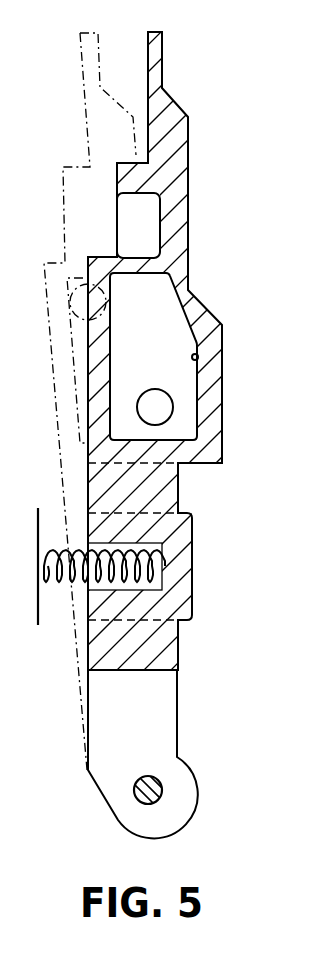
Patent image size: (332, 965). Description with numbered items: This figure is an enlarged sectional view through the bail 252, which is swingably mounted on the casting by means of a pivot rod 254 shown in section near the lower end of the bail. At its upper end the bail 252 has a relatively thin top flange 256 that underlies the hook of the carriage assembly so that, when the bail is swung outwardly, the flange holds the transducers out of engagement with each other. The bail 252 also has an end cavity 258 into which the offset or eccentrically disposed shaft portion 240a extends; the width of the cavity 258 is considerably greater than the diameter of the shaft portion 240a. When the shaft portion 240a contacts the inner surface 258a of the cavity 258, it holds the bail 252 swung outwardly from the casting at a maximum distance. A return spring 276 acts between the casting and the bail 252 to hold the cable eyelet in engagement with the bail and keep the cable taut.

The bail 252 is at (189, 206).
The top flange 256 is at (163, 47).
The end cavity 258 is at (165, 298).
The inner surface of the cavity 258a is at (198, 357).
The offset shaft portion 240a is at (154, 389).
The pivot rod 254 is at (146, 775).
The return spring 276 is at (62, 585).